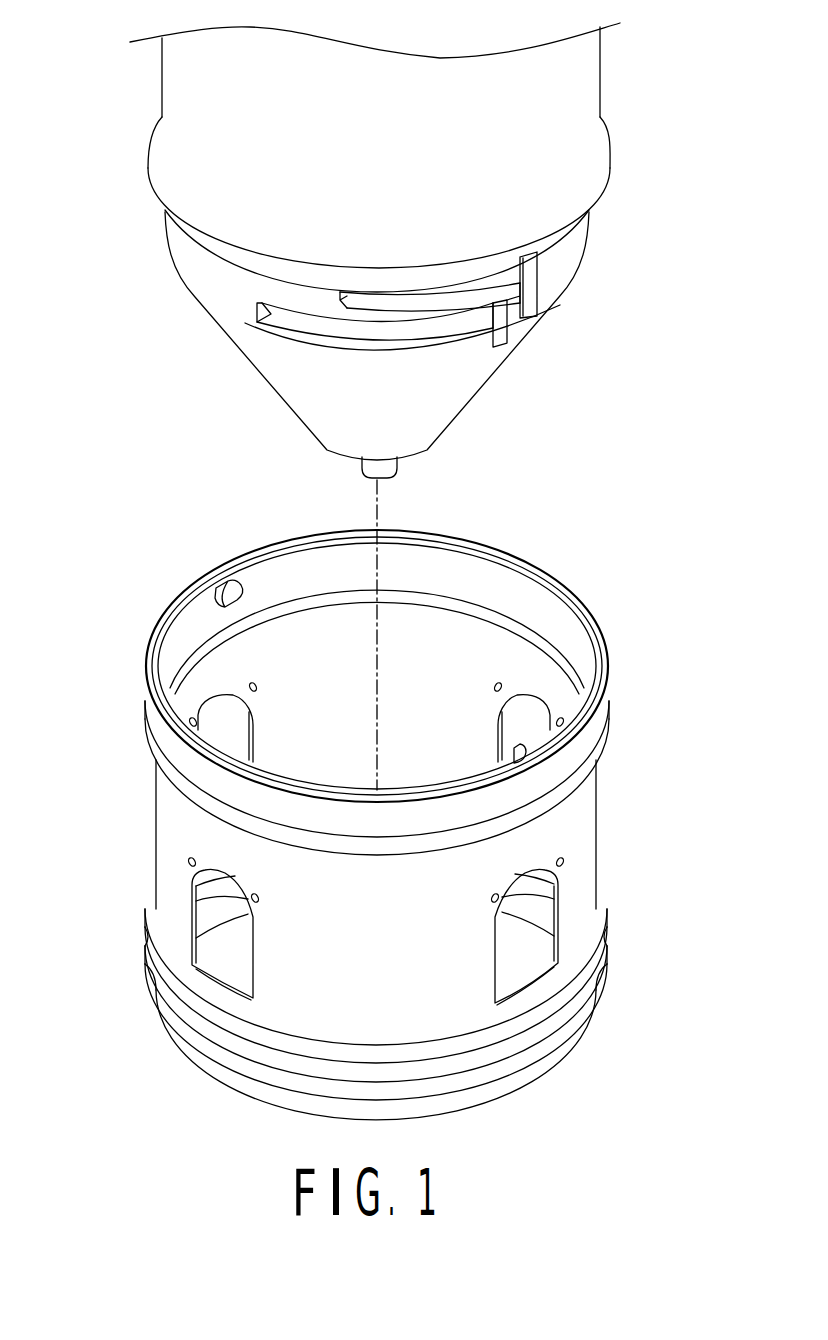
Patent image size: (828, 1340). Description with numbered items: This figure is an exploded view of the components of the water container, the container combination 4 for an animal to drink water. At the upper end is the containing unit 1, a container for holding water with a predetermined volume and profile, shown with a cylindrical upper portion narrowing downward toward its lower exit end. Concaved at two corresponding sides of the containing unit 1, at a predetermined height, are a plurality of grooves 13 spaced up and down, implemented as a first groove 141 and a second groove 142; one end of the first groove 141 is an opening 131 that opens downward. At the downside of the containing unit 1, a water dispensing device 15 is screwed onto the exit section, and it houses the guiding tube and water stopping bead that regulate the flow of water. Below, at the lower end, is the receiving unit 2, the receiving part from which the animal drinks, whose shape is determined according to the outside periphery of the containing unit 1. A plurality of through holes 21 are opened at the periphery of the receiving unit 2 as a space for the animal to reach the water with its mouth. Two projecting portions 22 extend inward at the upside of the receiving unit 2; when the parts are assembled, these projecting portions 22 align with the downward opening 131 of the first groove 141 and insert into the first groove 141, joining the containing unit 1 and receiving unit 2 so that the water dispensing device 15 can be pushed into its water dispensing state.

The containing unit 1 is at (580, 98).
The container combination 4 is at (162, 412).
The grooves 13 is at (560, 435).
The opening 131 is at (530, 312).
The first groove 141 is at (455, 295).
The second groove 142 is at (413, 337).
The water dispensing device 15 is at (390, 465).
The receiving unit 2 is at (578, 832).
The through holes 21 is at (212, 948).
The projecting portions 22 is at (232, 580).